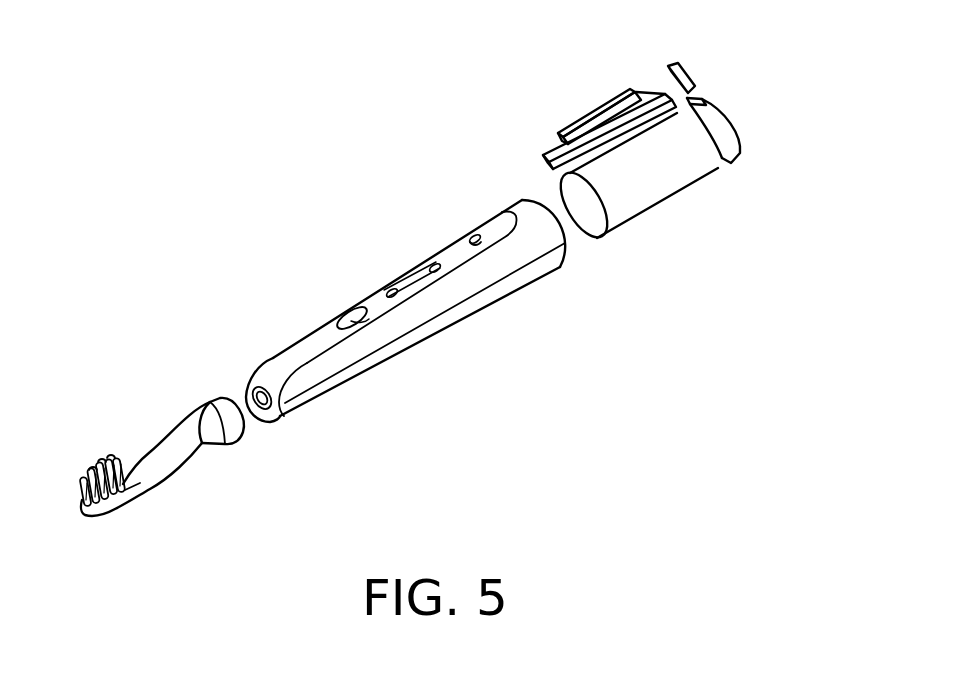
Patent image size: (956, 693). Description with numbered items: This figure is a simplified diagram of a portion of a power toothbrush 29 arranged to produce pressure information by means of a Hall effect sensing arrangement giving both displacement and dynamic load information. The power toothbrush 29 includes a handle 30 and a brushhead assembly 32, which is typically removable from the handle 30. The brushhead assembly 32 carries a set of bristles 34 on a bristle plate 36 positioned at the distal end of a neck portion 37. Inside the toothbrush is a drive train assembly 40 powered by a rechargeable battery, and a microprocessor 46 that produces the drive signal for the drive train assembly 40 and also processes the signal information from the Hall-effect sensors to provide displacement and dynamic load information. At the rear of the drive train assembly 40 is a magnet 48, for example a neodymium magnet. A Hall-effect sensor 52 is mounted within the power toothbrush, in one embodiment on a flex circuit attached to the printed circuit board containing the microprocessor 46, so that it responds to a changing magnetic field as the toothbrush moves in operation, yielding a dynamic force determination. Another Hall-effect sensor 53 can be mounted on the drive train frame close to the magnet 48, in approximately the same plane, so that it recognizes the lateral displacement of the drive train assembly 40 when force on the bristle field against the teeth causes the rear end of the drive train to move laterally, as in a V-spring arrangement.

The power toothbrush 29 is at (358, 251).
The handle 30 is at (449, 323).
The brushhead assembly 32 is at (198, 495).
The set of bristles 34 is at (92, 462).
The bristle plate 36 is at (112, 517).
The neck portion 37 is at (173, 447).
The drive train assembly 40 is at (663, 190).
The microprocessor 46 is at (543, 153).
The magnet 48 is at (726, 127).
The Hall-effect sensor 52 is at (594, 112).
The Hall-effect sensor 53 is at (694, 80).